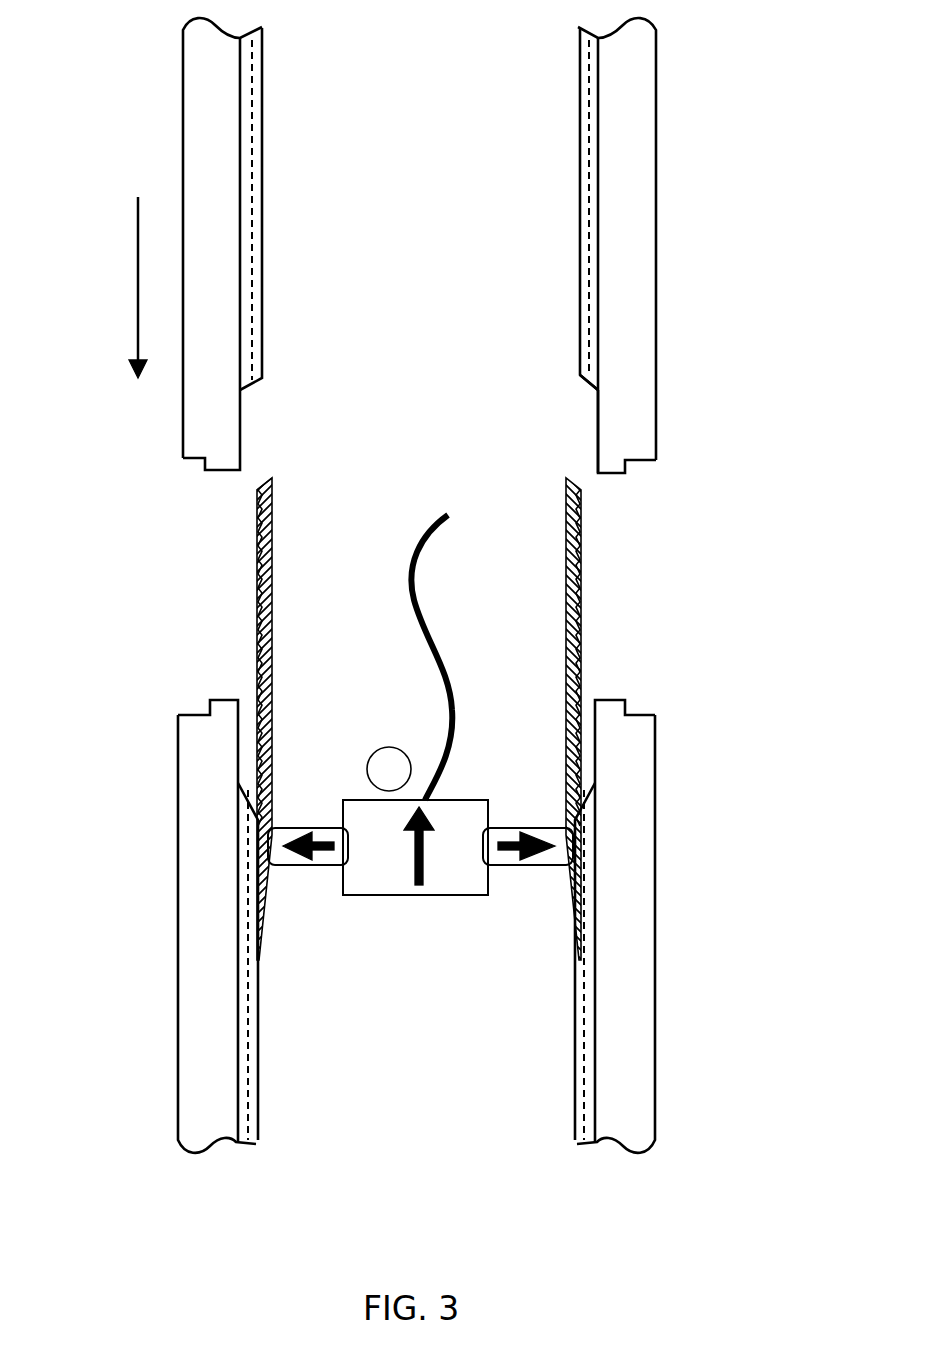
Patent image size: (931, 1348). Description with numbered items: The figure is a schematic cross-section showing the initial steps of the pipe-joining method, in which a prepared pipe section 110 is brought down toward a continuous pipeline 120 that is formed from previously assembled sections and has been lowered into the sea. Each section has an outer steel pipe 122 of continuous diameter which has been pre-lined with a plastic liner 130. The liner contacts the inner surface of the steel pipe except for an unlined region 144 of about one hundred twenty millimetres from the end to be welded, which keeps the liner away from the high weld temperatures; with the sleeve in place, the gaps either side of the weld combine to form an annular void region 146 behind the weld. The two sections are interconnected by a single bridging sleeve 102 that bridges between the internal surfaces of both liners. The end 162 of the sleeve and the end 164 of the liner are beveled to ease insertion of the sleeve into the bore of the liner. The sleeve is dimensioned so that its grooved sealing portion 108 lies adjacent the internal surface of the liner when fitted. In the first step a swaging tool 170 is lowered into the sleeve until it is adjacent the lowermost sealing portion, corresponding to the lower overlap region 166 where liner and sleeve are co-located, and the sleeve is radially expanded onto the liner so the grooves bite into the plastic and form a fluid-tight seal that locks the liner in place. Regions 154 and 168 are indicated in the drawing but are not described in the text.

The bridging sleeve 102 is at (262, 690).
The sealing portion 108 is at (597, 600).
The pipe section 110 is at (684, 226).
The continuous pipeline 120 is at (684, 987).
The outer steel pipe 122 is at (205, 128).
The plastic liner 130 is at (581, 58).
The unlined region 144 is at (585, 425).
The annular void region 146 is at (585, 745).
The end portion 154 is at (258, 470).
The end of bridging sleeve 162 is at (262, 485).
The end of liner 164 is at (583, 372).
The overlap region 166 is at (672, 943).
The teeth 168 is at (260, 575).
The swaging tool 170 is at (443, 815).